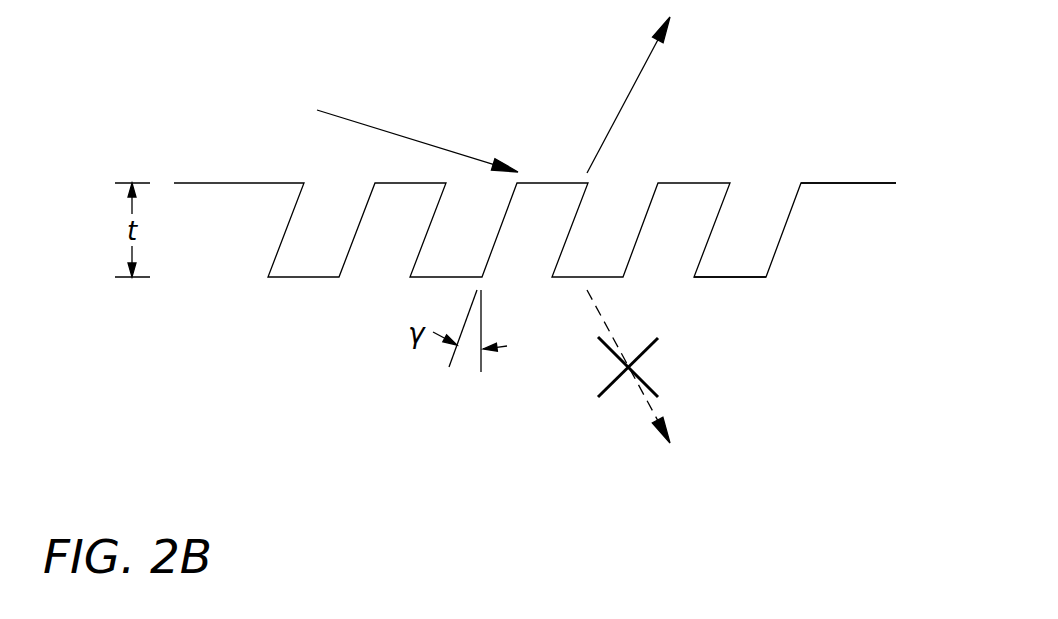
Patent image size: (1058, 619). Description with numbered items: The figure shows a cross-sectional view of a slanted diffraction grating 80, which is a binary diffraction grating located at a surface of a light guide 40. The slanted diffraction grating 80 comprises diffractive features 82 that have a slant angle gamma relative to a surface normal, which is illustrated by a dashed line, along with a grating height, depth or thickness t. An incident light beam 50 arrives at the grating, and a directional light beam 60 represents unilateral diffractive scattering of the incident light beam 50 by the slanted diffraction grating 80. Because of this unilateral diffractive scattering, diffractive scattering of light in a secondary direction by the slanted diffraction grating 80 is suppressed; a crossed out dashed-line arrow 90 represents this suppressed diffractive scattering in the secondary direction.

The light guide 40 is at (372, 63).
The incident light beam 50 is at (415, 138).
The directional light beam 60 is at (629, 95).
The slanted diffraction grating 80 is at (811, 99).
The diffractive features 82 is at (742, 304).
The crossed out dashed-line arrow 90 is at (645, 397).